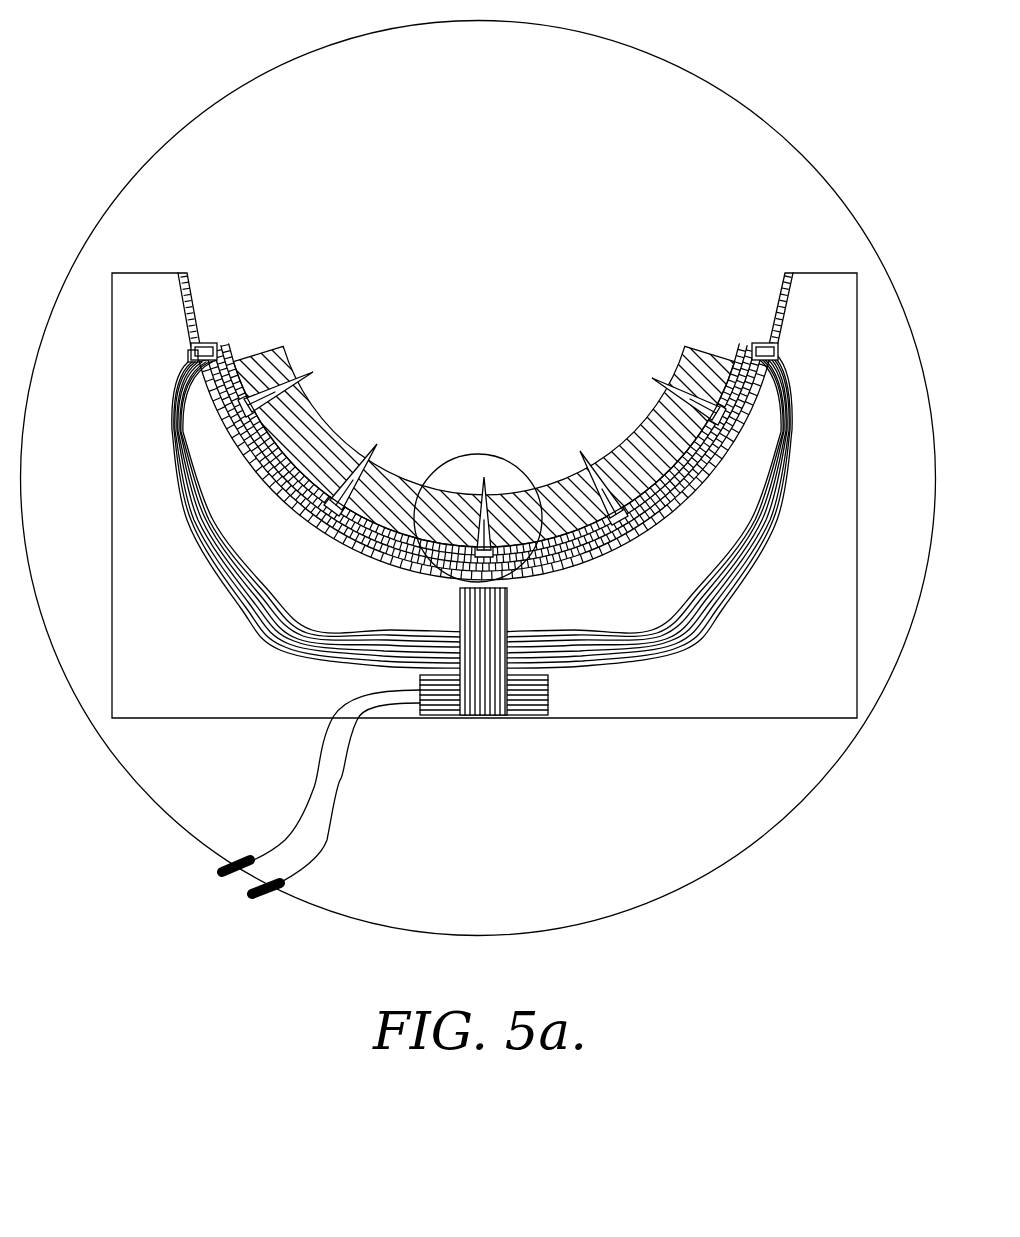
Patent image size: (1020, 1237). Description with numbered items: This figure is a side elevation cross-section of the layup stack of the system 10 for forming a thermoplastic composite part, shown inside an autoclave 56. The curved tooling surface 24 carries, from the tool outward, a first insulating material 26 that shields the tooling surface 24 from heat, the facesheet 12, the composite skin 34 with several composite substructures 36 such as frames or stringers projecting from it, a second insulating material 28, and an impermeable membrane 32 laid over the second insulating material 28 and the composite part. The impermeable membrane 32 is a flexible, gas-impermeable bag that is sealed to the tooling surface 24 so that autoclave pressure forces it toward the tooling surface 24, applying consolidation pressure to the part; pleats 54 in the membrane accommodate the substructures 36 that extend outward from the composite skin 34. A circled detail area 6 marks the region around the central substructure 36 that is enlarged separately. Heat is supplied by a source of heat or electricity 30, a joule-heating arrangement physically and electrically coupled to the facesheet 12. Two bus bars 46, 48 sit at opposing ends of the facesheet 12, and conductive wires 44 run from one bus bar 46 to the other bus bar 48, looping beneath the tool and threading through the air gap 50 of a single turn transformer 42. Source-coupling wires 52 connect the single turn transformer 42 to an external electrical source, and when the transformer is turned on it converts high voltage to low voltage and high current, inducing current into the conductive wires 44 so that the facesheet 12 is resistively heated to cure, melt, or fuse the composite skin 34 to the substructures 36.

The system 10 is at (120, 106).
The autoclave 56 is at (714, 89).
The source of heat or electricity 30 is at (611, 687).
The conductive wires 44 is at (656, 628).
The second insulating material 28 is at (625, 455).
The first insulating material 26 is at (681, 507).
The facesheet 12 is at (734, 440).
The pleats 54 is at (375, 440).
The composite substructure 36 is at (605, 470).
The composite skin 34 is at (731, 373).
The detail region of FIG. 6 is at (492, 456).
The tooling surface 24 is at (783, 282).
The impermeable membrane 32 is at (207, 343).
The bus bar 46 is at (190, 352).
The bus bar 48 is at (779, 352).
The single turn transformer 42 is at (478, 718).
The air gap 50 is at (508, 636).
The source-coupling wire 52 is at (312, 790).